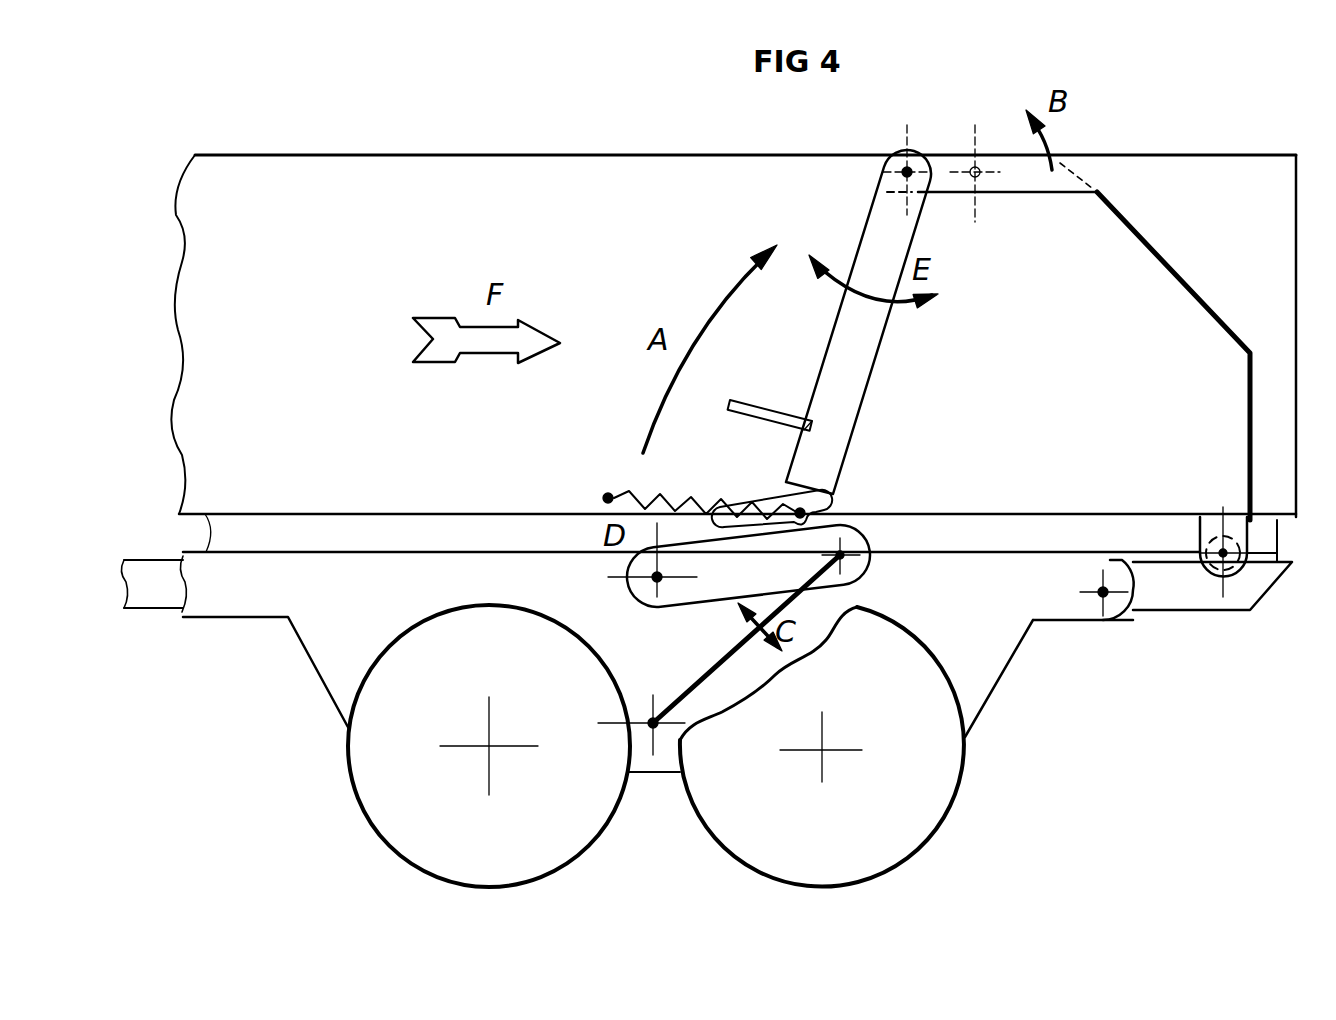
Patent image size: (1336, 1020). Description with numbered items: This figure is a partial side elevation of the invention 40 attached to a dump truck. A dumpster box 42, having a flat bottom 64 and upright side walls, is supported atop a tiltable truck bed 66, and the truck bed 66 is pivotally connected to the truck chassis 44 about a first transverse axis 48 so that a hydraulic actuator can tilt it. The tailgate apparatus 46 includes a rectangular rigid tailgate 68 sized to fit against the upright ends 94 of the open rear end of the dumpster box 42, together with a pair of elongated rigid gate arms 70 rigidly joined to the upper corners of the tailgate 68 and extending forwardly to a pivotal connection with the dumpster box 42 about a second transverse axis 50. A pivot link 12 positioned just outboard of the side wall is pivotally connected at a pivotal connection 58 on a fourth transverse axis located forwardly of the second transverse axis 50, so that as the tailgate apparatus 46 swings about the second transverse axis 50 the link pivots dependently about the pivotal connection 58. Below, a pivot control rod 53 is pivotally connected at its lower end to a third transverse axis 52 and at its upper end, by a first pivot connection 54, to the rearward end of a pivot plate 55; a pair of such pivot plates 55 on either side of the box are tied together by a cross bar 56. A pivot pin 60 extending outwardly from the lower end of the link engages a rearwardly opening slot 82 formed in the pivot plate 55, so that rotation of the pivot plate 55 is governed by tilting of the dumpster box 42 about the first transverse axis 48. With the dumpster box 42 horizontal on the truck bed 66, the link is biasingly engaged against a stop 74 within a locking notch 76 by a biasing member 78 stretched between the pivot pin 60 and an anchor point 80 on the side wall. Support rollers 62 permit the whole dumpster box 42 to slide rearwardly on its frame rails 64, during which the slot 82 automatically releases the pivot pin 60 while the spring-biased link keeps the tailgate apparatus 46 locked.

The latch arm 12 is at (866, 343).
The invention 40 is at (733, 315).
The dumpster box 42 is at (350, 150).
The truck chassis 44 is at (730, 603).
The tailgate apparatus 46 is at (1068, 297).
The first transverse axis 48 is at (1100, 598).
The second transverse axis 50 is at (972, 166).
The third transverse axis 52 is at (652, 726).
The pivot control rod 53 is at (722, 662).
The first pivot connection 54 is at (842, 554).
The pivot plate 55 is at (778, 574).
The cross bar 56 is at (650, 578).
The pivotal connection 58 is at (904, 170).
The pivot pin 60 is at (835, 494).
The support rollers 62 is at (1210, 580).
The flat bottom 64 is at (360, 525).
The truck bed 66 is at (149, 612).
The tailgate 68 is at (1298, 176).
The gate arms 70 is at (1050, 196).
The stop 74 is at (763, 400).
The locking notch 76 is at (808, 437).
The biasing member 78 is at (694, 507).
The anchor point 80 is at (606, 492).
The slot 82 is at (828, 512).
The upright ends 94 is at (1250, 447).